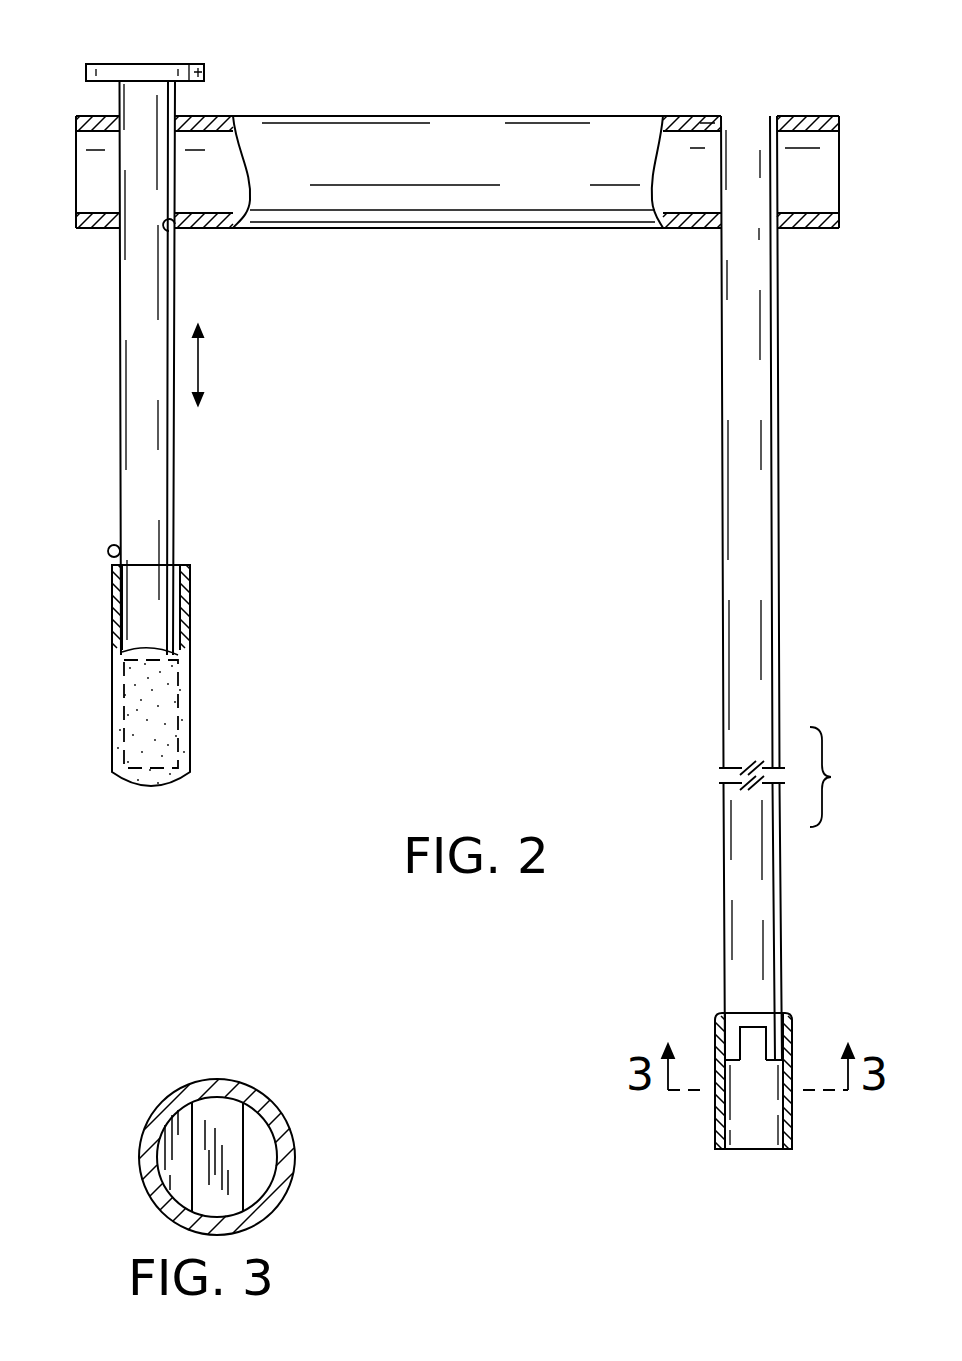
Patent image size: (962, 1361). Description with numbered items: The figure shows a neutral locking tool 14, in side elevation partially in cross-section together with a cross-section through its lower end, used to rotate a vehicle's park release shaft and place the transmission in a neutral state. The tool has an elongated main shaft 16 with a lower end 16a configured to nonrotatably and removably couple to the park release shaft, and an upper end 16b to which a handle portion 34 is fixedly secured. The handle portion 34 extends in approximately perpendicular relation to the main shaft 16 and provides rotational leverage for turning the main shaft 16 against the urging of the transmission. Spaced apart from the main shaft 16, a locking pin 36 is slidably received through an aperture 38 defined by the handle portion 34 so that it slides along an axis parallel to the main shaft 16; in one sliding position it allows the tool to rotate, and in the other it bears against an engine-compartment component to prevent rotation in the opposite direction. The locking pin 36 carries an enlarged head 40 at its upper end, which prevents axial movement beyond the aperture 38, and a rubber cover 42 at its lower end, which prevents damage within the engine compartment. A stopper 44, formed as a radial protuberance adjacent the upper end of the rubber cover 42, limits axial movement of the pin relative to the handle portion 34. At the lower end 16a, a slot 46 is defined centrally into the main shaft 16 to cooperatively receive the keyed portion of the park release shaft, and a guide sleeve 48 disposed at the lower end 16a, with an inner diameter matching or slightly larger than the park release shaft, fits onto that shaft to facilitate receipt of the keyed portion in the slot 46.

In FIG. 2, the neutral locking tool 14 is at (610, 84).
In FIG. 2, the main shaft 16 is at (768, 643).
In FIG. 2, the lower end 16a is at (737, 1047).
In FIG. 3, the lower end 16a is at (262, 1168).
In FIG. 2, the upper end 16b is at (750, 125).
In FIG. 2, the handle portion 34 is at (437, 195).
In FIG. 2, the locking pin 36 is at (133, 374).
In FIG. 2, the aperture 38 is at (172, 234).
In FIG. 2, the enlarged head 40 is at (206, 72).
In FIG. 2, the rubber cover 42 is at (186, 706).
In FIG. 2, the stopper 44 is at (109, 546).
In FIG. 2, the slot 46 is at (753, 1047).
In FIG. 3, the slot 46 is at (228, 1115).
In FIG. 2, the guide sleeve 48 is at (793, 1128).
In FIG. 3, the guide sleeve 48 is at (282, 1135).